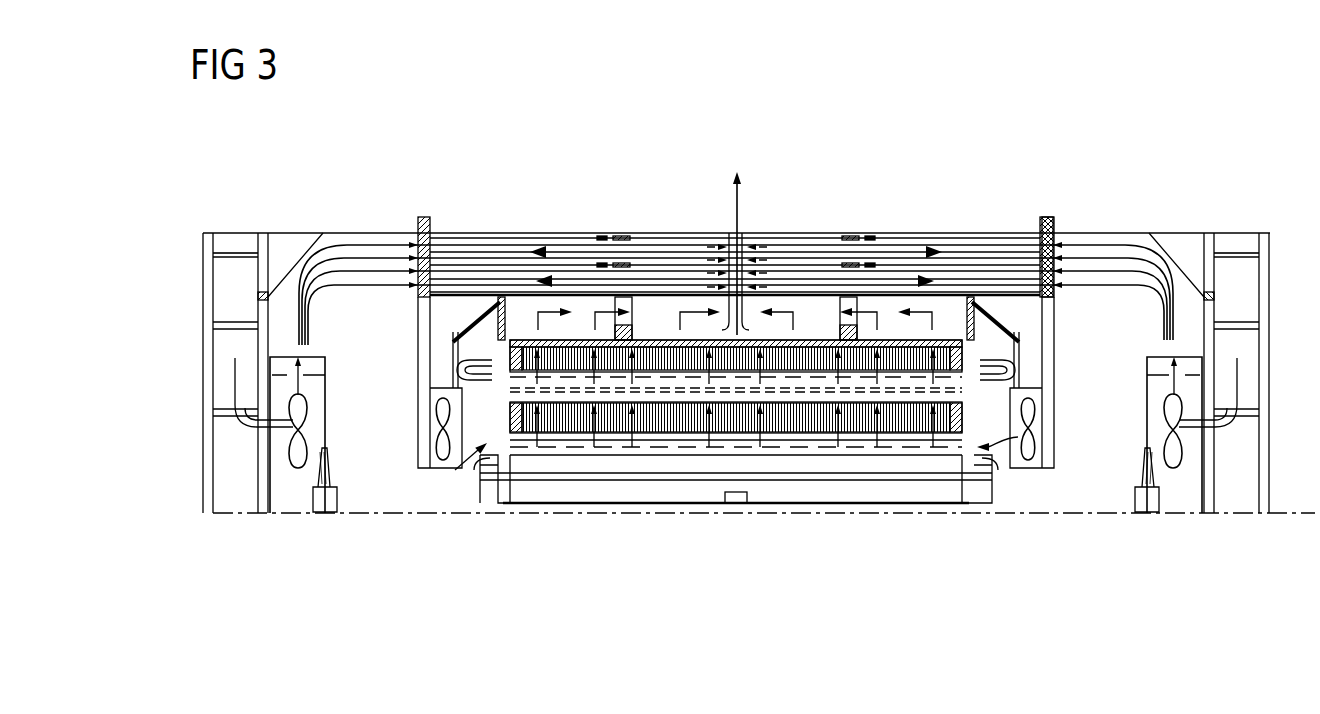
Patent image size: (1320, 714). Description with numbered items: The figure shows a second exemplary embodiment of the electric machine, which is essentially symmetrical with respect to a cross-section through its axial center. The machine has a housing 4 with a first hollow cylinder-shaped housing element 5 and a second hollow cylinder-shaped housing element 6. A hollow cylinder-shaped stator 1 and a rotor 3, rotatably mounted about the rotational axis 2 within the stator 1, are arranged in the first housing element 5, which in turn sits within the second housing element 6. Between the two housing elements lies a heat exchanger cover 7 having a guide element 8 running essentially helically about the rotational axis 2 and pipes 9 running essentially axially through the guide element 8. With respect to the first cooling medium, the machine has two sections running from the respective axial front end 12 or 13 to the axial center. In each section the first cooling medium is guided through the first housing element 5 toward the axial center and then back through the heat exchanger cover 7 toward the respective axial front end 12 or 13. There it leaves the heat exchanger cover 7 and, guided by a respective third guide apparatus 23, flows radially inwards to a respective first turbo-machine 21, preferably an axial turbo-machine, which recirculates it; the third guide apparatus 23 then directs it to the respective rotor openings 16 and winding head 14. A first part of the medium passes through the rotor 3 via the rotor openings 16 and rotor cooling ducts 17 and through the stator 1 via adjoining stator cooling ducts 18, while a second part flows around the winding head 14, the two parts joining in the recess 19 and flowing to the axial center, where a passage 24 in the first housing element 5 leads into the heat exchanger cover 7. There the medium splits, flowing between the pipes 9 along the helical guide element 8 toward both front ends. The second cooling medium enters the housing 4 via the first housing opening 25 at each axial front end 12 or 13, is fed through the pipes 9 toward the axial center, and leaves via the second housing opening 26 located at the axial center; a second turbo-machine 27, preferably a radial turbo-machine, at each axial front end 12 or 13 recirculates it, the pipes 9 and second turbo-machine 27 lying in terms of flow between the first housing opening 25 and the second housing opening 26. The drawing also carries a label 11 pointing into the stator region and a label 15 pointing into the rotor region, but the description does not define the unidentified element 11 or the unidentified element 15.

The stator 1 is at (519, 320).
The rotational axis 2 is at (1298, 514).
The rotor 3 is at (480, 452).
The housing 4 is at (1263, 268).
The first housing element 5 is at (535, 295).
The second housing element 6 is at (568, 232).
The heat exchanger cover 7 is at (647, 275).
The guide element 8 is at (600, 232).
The pipes 9 is at (1033, 297).
The stator 11 is at (890, 335).
The first axial front end 12 is at (1062, 388).
The second axial front end 13 is at (412, 388).
The winding head 14 is at (438, 300).
The rotor 15 is at (677, 430).
The rotor openings 16 is at (472, 428).
The rotor cooling ducts 17 is at (833, 432).
The stator cooling ducts 18 is at (833, 338).
The recess 19 is at (808, 310).
The first turbo-machine 21 is at (443, 468).
The third guide apparatus 23 is at (437, 345).
The passage 24 is at (728, 296).
The first housing opening 25 is at (236, 300).
The second housing opening 26 is at (742, 300).
The second turbo-machine 27 is at (298, 468).